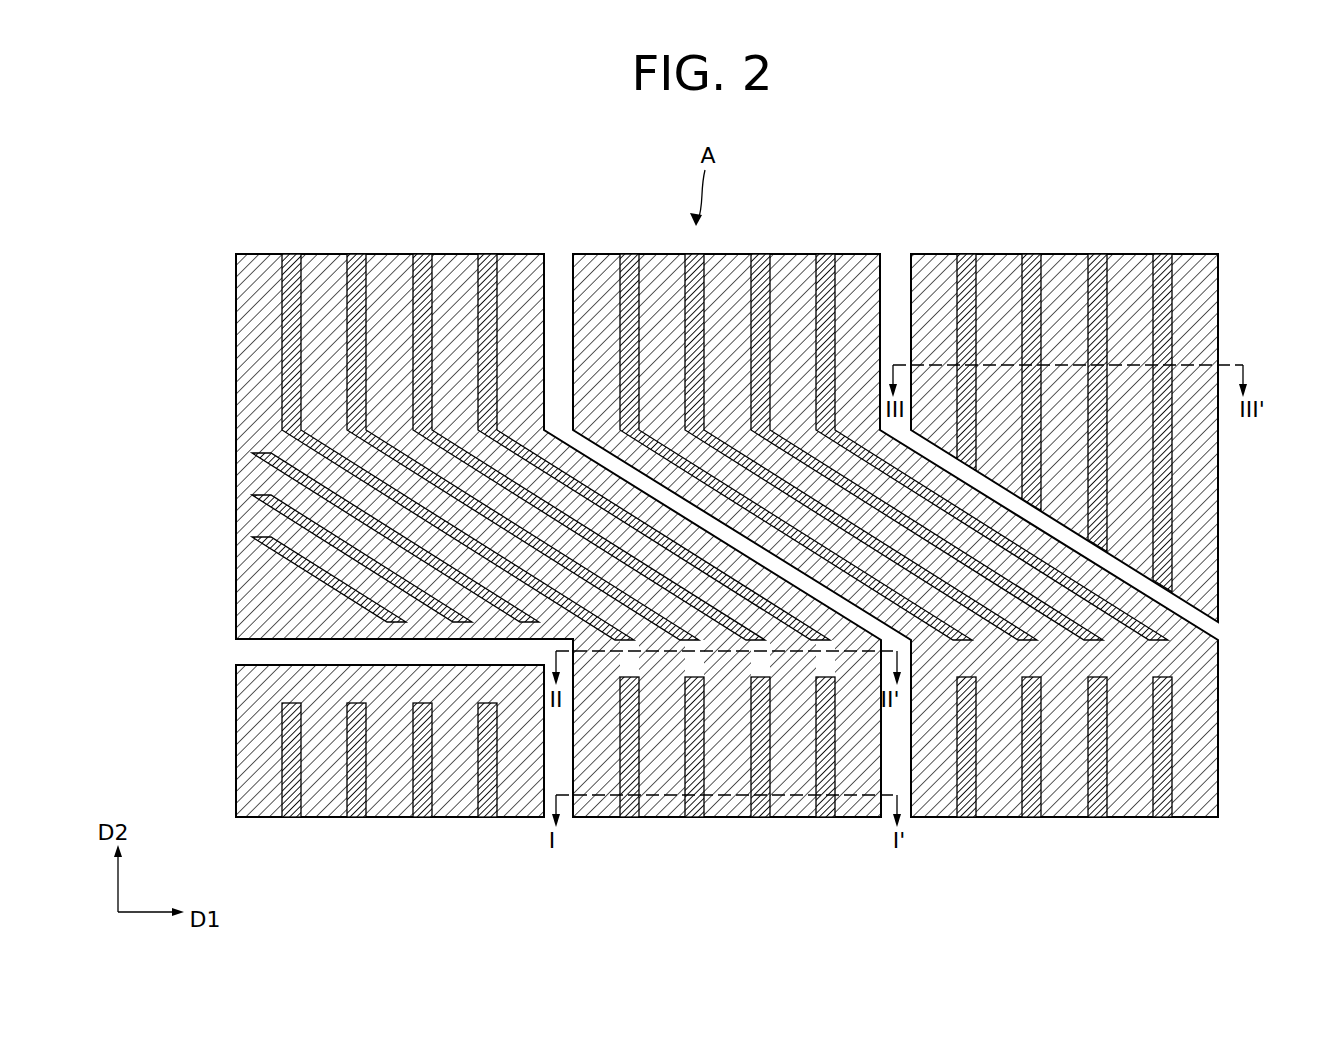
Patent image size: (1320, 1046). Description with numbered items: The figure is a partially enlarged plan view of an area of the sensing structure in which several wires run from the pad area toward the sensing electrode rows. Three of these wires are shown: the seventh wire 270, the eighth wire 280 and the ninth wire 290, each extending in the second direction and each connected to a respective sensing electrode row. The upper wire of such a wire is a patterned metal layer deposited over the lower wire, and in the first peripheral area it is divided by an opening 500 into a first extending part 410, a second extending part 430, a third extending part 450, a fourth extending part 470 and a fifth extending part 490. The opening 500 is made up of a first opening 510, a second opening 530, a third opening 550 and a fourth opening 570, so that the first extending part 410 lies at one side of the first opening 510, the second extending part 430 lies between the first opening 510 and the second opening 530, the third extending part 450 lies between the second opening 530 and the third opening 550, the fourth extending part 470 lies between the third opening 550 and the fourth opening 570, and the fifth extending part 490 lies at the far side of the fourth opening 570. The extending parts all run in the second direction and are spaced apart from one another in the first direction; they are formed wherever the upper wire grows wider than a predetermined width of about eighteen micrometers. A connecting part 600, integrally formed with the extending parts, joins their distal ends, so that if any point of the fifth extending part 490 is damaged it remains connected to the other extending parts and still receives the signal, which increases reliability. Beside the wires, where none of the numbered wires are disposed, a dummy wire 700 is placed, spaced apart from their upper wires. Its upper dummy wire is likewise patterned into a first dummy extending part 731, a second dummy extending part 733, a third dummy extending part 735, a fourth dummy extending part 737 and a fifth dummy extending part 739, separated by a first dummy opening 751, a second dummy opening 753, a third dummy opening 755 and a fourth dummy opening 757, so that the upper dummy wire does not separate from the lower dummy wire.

The seventh wire 270 is at (236, 726).
The eighth wire 280 is at (478, 253).
The ninth wire 290 is at (812, 253).
The first extending part 410 is at (597, 812).
The second extending part 430 is at (662, 812).
The third extending part 450 is at (727, 812).
The fourth extending part 470 is at (792, 812).
The fifth extending part 490 is at (858, 812).
The opening 500 is at (726, 812).
The first opening 510 is at (627, 813).
The second opening 530 is at (692, 813).
The third opening 550 is at (757, 813).
The fourth opening 570 is at (823, 794).
The connecting part 600 is at (684, 794).
The dummy wire 700 is at (1218, 510).
The first dummy extending part 731 is at (935, 266).
The second dummy extending part 733 is at (1000, 266).
The third dummy extending part 735 is at (1065, 266).
The fourth dummy extending part 737 is at (1133, 266).
The fifth dummy extending part 739 is at (1197, 266).
The first dummy opening 751 is at (963, 258).
The second dummy opening 753 is at (1028, 258).
The third dummy opening 755 is at (1093, 258).
The fourth dummy opening 757 is at (1160, 258).